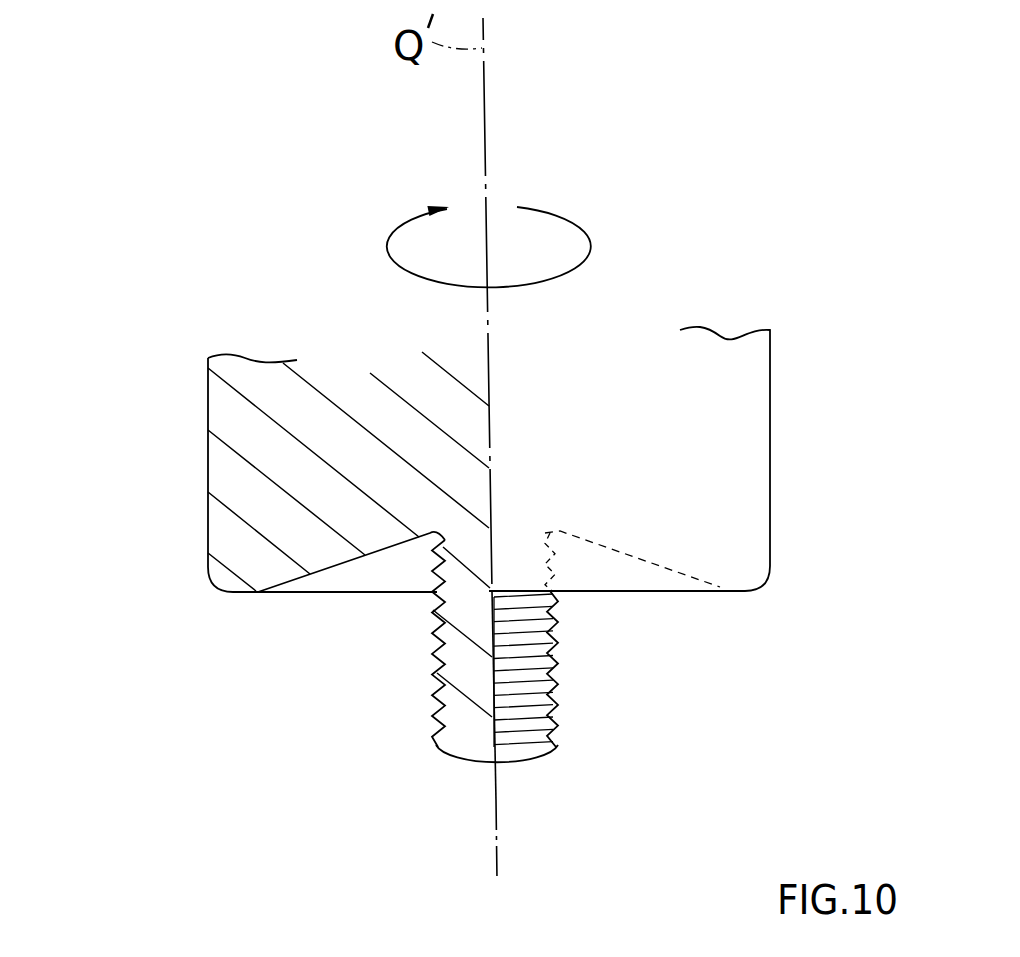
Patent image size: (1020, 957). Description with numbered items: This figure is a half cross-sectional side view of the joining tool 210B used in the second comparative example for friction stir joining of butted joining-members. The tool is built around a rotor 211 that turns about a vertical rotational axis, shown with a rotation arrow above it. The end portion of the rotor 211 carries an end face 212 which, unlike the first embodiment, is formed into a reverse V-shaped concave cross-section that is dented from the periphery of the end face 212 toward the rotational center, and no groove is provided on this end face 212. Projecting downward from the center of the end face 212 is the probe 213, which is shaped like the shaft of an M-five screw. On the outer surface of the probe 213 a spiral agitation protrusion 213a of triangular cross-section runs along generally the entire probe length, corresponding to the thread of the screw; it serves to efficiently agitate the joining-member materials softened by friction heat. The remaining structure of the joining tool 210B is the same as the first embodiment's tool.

The joining tool 210B is at (203, 373).
The rotor 211 is at (225, 473).
The end face 212 is at (342, 570).
The probe 213 is at (463, 727).
The spiral agitation protrusion 213a is at (438, 687).